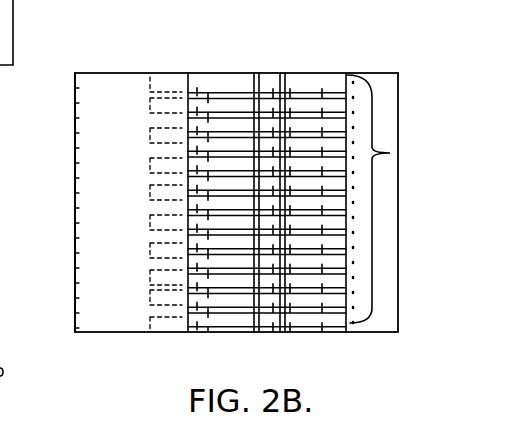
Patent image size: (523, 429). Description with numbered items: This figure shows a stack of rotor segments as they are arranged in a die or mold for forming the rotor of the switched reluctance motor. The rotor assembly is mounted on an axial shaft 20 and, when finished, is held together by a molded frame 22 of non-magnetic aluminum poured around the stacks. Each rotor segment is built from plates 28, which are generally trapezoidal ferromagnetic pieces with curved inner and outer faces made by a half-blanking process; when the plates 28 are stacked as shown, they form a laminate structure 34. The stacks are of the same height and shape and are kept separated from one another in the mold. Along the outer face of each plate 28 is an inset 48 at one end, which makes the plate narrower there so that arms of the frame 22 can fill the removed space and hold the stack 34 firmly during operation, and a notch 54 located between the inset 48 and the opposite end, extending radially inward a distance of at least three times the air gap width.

The axial shaft 20 is at (406, 237).
The molded frame 22 is at (76, 175).
The plate 28 is at (309, 202).
The laminate structure 34 is at (252, 73).
The inset 48 is at (150, 80).
The notch 54 is at (287, 73).